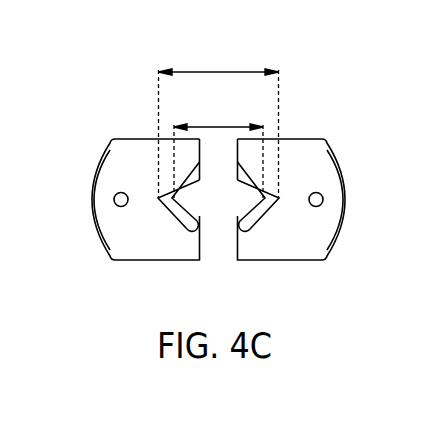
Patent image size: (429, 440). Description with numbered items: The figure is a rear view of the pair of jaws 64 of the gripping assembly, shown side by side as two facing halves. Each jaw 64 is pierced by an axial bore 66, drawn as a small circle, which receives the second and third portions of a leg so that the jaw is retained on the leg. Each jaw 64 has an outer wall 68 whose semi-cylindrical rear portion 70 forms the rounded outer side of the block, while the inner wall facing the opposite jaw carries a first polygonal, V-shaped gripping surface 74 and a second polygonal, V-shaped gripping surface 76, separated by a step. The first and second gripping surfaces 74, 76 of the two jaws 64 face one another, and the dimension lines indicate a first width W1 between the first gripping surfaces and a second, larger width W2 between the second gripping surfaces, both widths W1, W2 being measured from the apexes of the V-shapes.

The jaw 64 is at (128, 150).
The axial bore 66 is at (114, 201).
The outer wall 68 is at (323, 197).
The semi-cylindrical rear portion 70 is at (95, 173).
The first polygonal gripping surface 74 is at (242, 194).
The second polygonal gripping surface 76 is at (188, 231).
The first width W1 is at (208, 126).
The second larger width W2 is at (250, 70).